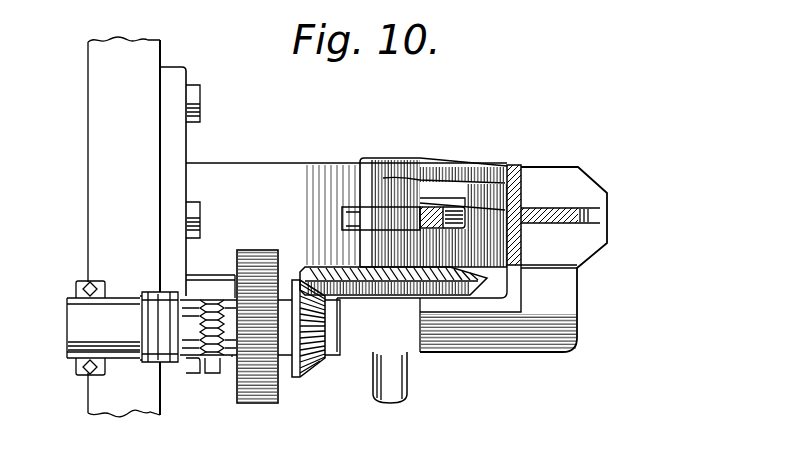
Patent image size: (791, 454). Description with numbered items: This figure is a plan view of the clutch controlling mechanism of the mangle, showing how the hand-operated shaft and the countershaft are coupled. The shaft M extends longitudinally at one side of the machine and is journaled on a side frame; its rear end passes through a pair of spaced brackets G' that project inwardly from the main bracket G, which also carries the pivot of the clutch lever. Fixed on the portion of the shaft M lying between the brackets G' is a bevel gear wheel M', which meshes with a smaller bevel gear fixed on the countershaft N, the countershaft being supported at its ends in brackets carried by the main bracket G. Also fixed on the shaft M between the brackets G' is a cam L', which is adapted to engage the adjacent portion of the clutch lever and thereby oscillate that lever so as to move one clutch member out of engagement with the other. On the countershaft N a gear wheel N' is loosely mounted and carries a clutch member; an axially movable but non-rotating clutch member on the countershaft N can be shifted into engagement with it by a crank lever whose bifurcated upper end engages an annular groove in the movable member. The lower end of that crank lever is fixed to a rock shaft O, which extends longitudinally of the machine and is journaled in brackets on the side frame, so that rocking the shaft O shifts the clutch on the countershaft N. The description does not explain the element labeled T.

The countershaft N is at (152, 303).
The rock shaft O is at (210, 373).
The gear wheel N' is at (264, 348).
The bevel gear wheel M' is at (374, 252).
The cam L' is at (350, 202).
The pin T is at (436, 206).
The spaced brackets G' is at (438, 257).
The main bracket G is at (472, 259).
The shaft M is at (412, 390).